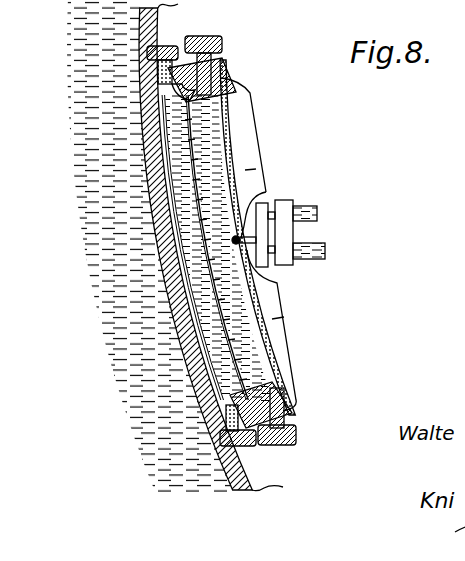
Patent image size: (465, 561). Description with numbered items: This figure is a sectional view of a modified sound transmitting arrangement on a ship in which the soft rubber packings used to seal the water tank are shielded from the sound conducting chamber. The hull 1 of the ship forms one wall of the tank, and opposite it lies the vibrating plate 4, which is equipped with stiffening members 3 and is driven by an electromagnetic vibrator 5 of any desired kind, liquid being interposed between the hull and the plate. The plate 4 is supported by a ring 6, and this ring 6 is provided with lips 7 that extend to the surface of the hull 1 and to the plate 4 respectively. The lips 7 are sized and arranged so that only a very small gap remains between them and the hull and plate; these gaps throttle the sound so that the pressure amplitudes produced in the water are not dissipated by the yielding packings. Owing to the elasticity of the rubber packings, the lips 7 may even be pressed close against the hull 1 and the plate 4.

The hull 1 is at (160, 203).
The stiffening members 3 is at (250, 170).
The plate 4 is at (226, 117).
The electromagnetic vibrator 5 is at (282, 240).
The ring 6 is at (200, 66).
The lips 7 is at (165, 100).